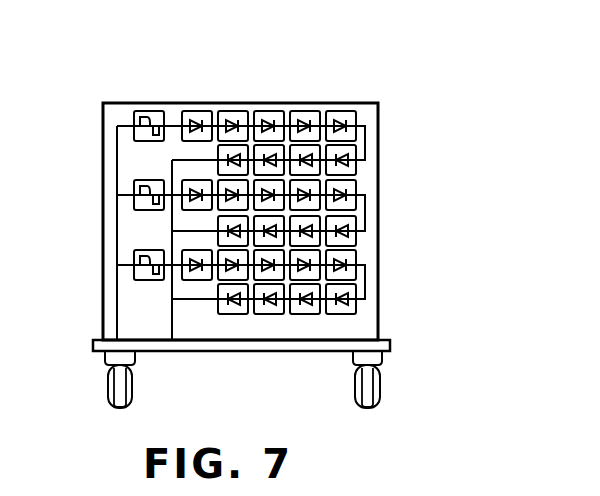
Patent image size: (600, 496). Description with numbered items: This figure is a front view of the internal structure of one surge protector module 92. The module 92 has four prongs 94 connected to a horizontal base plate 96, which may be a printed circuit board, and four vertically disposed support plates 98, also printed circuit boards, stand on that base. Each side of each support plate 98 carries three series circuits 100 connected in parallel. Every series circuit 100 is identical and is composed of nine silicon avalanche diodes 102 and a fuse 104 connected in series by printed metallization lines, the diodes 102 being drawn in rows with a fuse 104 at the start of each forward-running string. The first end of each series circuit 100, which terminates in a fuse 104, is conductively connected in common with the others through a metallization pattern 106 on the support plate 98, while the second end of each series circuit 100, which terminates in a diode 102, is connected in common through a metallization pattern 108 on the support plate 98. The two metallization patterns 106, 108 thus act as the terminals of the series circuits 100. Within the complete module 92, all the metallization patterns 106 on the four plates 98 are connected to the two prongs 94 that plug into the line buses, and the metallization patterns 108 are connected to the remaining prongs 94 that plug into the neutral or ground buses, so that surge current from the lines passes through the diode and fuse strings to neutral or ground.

The surge protector module 92 is at (97, 110).
The prongs 94 is at (120, 402).
The horizontal base plate 96 is at (391, 346).
The support plate 98 is at (362, 110).
The series circuit 100 is at (385, 138).
The silicon avalanche diode 102 is at (268, 122).
The fuse 104 is at (148, 114).
The metallization pattern 106 is at (117, 173).
The metallization pattern 108 is at (172, 325).